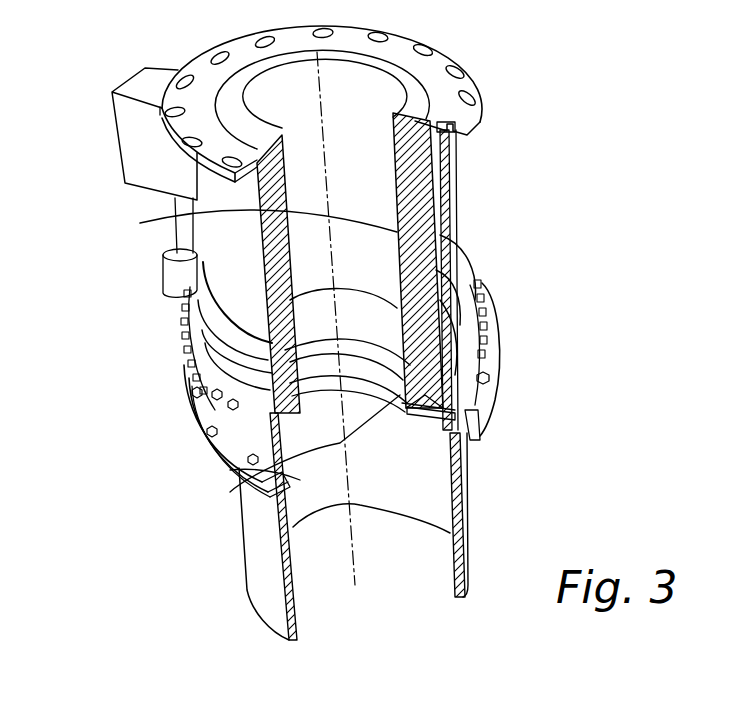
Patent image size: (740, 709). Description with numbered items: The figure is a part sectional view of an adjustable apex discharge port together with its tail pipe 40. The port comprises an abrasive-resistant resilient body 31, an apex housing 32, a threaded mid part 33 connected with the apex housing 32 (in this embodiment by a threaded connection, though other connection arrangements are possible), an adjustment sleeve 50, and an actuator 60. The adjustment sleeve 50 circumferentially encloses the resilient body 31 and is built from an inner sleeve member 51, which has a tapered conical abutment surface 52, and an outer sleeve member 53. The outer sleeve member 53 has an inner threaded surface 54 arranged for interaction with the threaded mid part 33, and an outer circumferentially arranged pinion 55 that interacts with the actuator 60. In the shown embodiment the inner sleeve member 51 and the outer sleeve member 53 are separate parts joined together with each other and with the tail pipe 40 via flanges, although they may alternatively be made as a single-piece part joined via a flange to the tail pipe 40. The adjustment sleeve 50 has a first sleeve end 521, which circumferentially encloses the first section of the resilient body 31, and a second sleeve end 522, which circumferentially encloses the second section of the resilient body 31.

The abrasive-resistant resilient body 31 is at (428, 208).
The apex housing 32 is at (442, 178).
The threaded mid part 33 is at (487, 287).
The tail pipe 40 is at (272, 531).
The adjustment sleeve 50 is at (515, 368).
The inner sleeve member 51 is at (213, 455).
The tapered conical abutment surface 52 is at (235, 361).
The first sleeve end 521 is at (222, 214).
The second sleeve end 522 is at (285, 484).
The outer sleeve member 53 is at (203, 418).
The inner threaded surface 54 is at (398, 290).
The pinion 55 is at (503, 332).
The actuator 60 is at (133, 137).